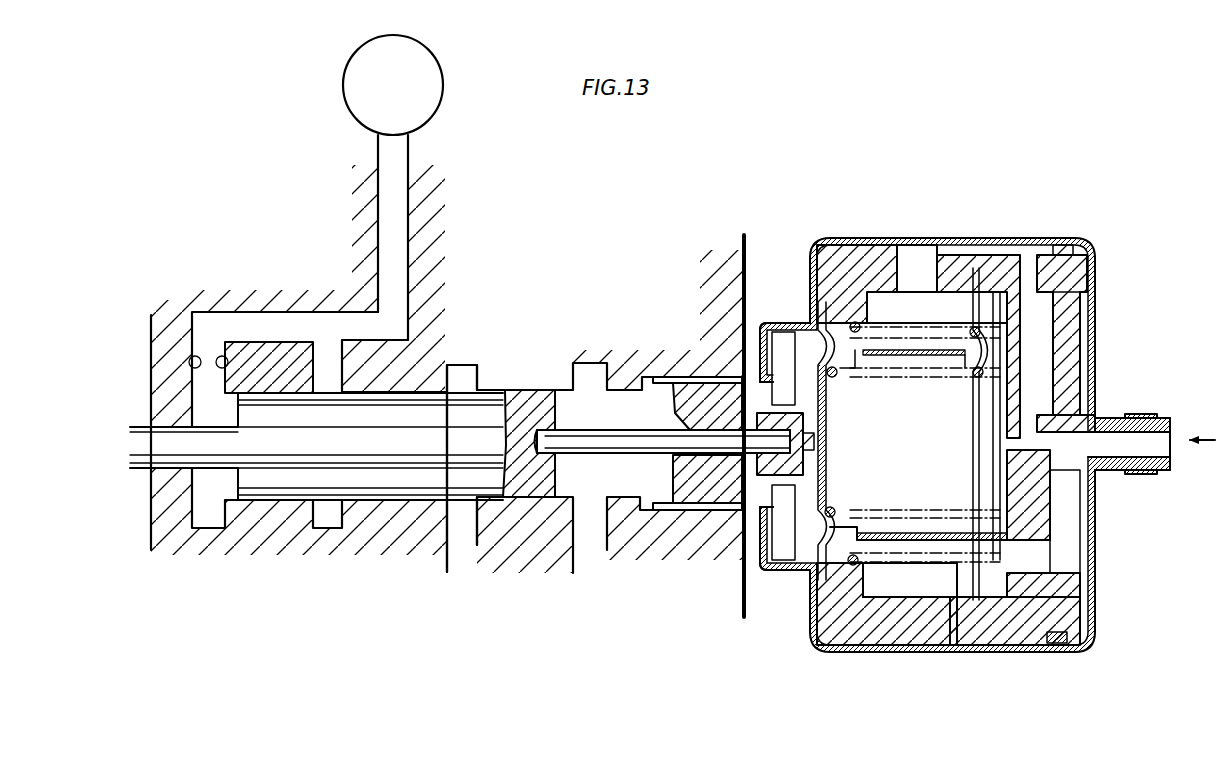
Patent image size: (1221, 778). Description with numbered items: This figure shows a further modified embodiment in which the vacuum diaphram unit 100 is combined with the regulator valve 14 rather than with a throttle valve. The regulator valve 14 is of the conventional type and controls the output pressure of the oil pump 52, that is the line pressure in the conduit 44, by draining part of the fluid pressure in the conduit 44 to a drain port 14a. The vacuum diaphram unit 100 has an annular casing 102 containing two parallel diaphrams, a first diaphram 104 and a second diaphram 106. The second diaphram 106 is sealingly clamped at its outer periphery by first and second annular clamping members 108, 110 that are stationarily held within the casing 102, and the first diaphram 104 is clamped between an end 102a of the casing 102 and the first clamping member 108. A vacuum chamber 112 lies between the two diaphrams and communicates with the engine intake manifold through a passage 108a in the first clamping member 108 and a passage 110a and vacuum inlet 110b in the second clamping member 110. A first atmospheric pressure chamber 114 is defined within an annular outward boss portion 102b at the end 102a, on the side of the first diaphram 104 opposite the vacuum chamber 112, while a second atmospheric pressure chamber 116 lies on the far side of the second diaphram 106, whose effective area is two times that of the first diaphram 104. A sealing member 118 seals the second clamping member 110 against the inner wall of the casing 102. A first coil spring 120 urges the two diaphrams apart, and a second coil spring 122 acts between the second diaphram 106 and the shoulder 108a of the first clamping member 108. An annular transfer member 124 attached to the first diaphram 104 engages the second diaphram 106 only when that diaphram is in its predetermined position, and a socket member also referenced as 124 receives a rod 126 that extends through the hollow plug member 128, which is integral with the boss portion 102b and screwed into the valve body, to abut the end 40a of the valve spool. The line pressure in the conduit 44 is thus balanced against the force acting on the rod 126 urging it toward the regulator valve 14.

The regulator valve 14 is at (485, 325).
The drain port 14a is at (463, 548).
The end of the valve spool 40a is at (553, 470).
The conduit 44 is at (388, 208).
The oil pump 52 is at (352, 117).
The vacuum diaphram unit 100 is at (951, 423).
The annular casing 102 is at (1022, 237).
The end of the casing 102a is at (806, 618).
The annular outward boss portion 102b is at (793, 322).
The first diaphram 104 is at (780, 530).
The second diaphram 106 is at (980, 628).
The first annular clamping member 108 is at (858, 638).
The passage (shoulder) of the first clamping member 108a is at (917, 237).
The second annular clamping member 110 is at (1030, 630).
The passage 110a is at (1072, 340).
The vacuum inlet 110b is at (1142, 476).
The vacuum chamber 112 is at (925, 628).
The first atmospheric pressure chamber 114 is at (758, 535).
The second atmospheric pressure chamber 116 is at (1003, 587).
The sealing member 118 is at (1065, 640).
The first coil spring 120 is at (855, 515).
The second coil spring 122 is at (920, 555).
The annular transfer member 124 is at (782, 380).
The rod 126 is at (590, 445).
The plug member 128 is at (687, 380).